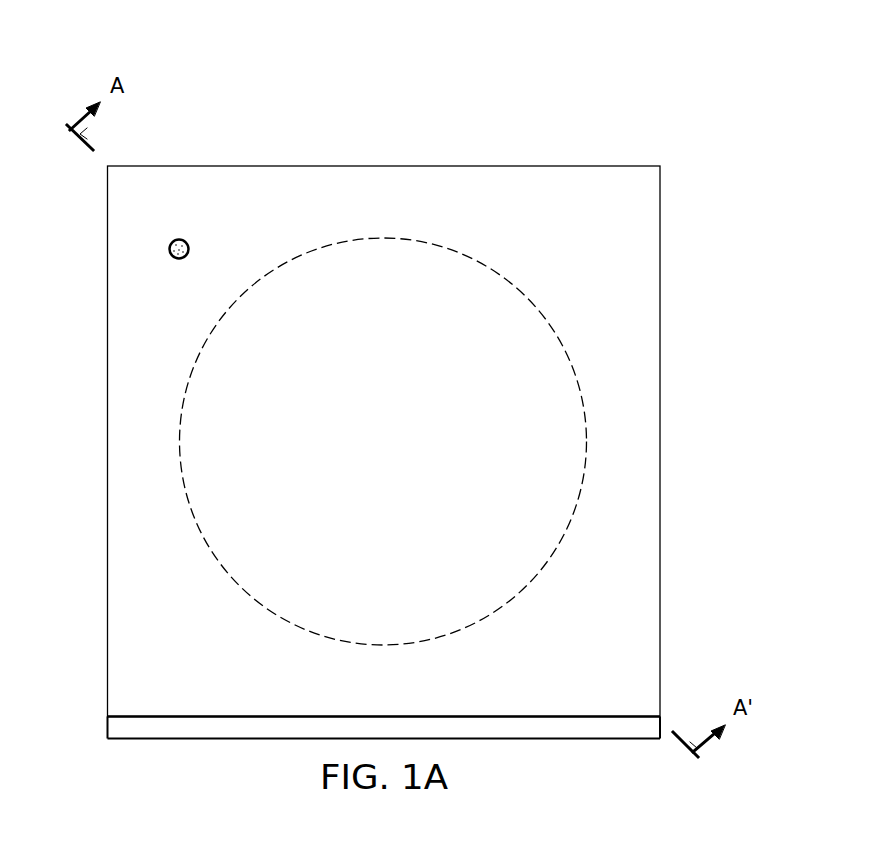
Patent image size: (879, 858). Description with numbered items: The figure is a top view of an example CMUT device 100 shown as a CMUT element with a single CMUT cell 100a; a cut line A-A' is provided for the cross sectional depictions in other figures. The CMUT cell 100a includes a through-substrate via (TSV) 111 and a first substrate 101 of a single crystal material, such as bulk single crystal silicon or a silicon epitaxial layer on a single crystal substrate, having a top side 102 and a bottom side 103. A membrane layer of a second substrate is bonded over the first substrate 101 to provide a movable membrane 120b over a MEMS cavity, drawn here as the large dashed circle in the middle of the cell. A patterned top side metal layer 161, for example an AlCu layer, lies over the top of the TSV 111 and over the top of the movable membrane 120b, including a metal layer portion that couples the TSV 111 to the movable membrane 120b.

The CMUT device 100 is at (577, 75).
The CMUT cell 100a is at (270, 145).
The patterned top side metal layer 161 is at (385, 175).
The through-substrate via 111 is at (192, 249).
The movable membrane 120b is at (408, 456).
The first substrate 101 is at (123, 726).
The top side 102 is at (595, 721).
The bottom side 103 is at (513, 739).